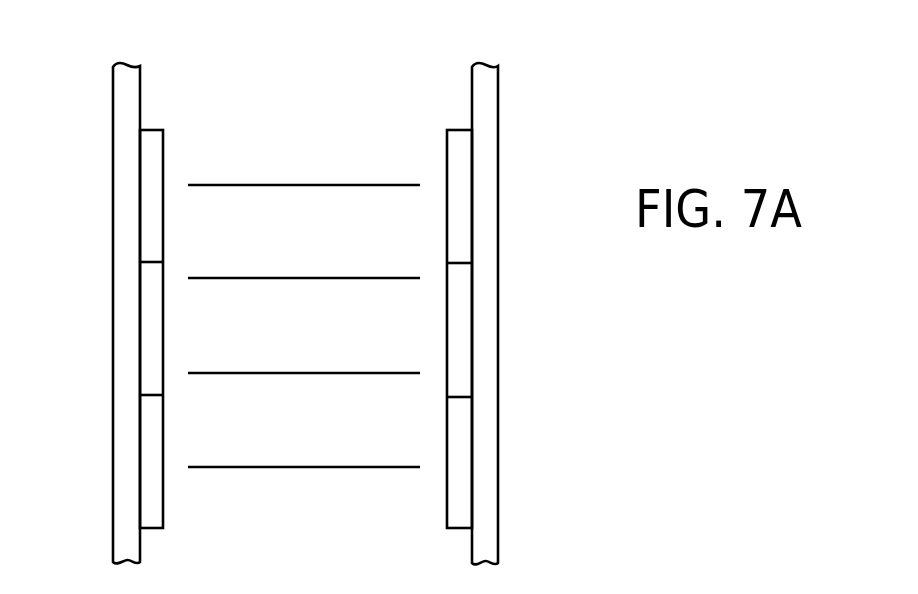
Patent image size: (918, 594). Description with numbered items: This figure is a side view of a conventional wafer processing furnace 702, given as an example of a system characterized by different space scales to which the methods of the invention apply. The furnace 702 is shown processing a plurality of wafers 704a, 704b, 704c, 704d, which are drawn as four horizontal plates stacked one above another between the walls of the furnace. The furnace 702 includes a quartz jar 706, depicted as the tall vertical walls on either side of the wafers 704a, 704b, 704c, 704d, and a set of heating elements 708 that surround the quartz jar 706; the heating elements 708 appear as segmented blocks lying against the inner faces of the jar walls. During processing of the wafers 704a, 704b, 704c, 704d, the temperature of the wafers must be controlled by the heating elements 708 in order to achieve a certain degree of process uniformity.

The furnace 702 is at (416, 40).
The wafer 704a is at (327, 184).
The wafer 704b is at (327, 277).
The wafer 704c is at (327, 372).
The wafer 704d is at (327, 466).
The quartz jar 706 is at (489, 271).
The heating elements 708 is at (152, 204).